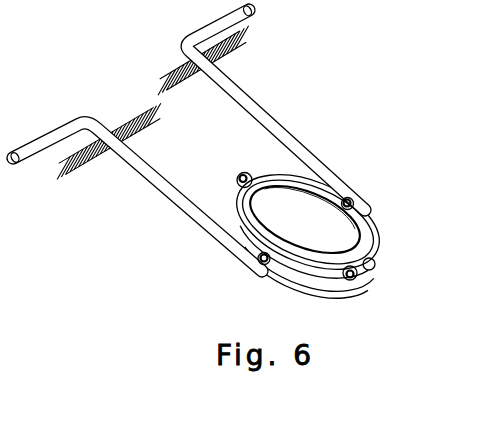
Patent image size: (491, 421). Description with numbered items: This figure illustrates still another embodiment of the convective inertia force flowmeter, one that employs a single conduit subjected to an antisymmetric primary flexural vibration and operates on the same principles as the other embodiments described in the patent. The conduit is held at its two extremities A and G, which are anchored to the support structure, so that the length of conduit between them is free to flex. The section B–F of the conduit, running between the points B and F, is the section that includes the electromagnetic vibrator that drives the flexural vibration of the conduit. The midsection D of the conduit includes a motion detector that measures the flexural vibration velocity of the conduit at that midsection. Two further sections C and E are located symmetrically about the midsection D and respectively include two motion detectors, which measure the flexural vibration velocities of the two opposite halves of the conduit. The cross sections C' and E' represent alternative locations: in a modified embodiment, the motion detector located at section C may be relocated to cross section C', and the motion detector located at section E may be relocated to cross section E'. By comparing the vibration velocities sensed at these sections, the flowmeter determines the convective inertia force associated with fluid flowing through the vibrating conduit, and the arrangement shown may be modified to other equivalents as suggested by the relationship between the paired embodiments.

The extremity of the conduit A is at (117, 151).
The extremity of the conduit G is at (224, 71).
The vibrator section end B is at (360, 283).
The vibrator section end F is at (370, 266).
The midsection of the conduit D is at (238, 176).
The motion detector section E is at (227, 272).
The relocated detector cross section E' is at (385, 181).
The motion detector section C is at (383, 195).
The relocated detector cross section C' is at (230, 284).